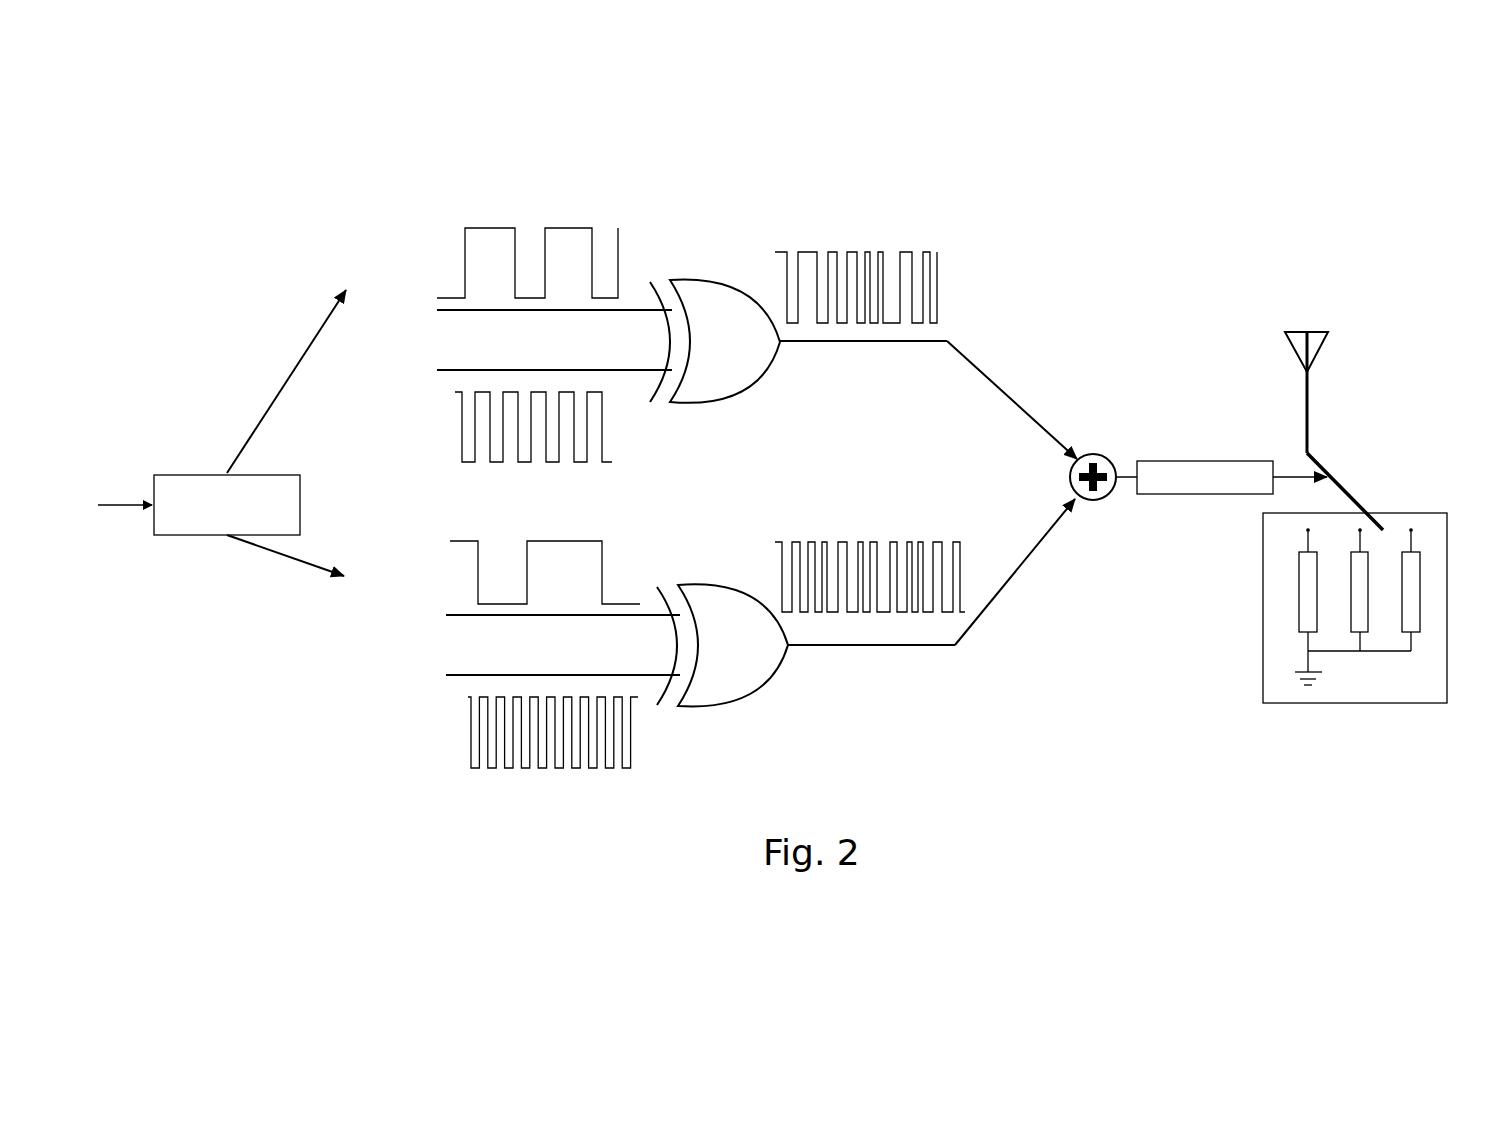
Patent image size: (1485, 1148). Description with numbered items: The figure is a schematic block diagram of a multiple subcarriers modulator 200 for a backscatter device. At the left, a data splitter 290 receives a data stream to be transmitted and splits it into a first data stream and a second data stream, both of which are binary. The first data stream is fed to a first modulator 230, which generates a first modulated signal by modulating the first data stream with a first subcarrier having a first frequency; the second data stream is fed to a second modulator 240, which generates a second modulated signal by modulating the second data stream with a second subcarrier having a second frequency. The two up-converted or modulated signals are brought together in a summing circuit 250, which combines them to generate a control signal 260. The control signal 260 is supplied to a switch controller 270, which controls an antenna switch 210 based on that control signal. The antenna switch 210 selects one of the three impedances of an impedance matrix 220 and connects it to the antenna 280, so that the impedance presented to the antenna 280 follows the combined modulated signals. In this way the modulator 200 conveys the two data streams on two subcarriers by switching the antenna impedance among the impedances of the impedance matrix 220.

The modulator 200 is at (1052, 715).
The antenna switch 210 is at (1350, 485).
The impedance matrix 220 is at (1402, 668).
The first modulator 230 is at (712, 290).
The second modulator 240 is at (712, 602).
The summing circuit 250 is at (1097, 452).
The control signal 260 is at (1128, 462).
The switch controller 270 is at (1158, 492).
The antenna 280 is at (1322, 332).
The data splitter 290 is at (177, 483).